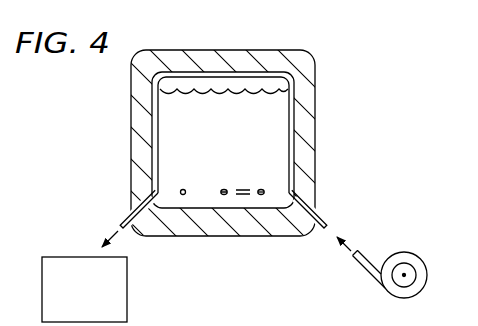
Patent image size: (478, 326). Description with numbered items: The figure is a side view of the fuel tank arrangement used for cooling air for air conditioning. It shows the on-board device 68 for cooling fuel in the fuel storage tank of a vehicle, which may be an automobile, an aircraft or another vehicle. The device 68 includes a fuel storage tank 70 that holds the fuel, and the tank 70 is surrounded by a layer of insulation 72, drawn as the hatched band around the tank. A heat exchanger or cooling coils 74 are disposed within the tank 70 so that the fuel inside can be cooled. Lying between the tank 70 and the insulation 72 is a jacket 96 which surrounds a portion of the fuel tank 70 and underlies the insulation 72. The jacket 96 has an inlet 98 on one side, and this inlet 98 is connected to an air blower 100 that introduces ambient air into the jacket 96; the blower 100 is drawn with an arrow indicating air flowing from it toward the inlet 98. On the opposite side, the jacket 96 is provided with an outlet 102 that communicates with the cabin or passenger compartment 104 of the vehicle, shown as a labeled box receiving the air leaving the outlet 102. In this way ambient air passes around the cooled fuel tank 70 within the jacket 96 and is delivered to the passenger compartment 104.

The on-board device 68 is at (212, 48).
The fuel storage tank 70 is at (285, 133).
The layer of insulation 72 is at (310, 98).
The heat exchanger 74 is at (265, 190).
The jacket 96 is at (288, 74).
The inlet 98 is at (321, 222).
The air blower 100 is at (387, 289).
The outlet 102 is at (123, 221).
The cabin or passenger compartment 104 is at (127, 285).